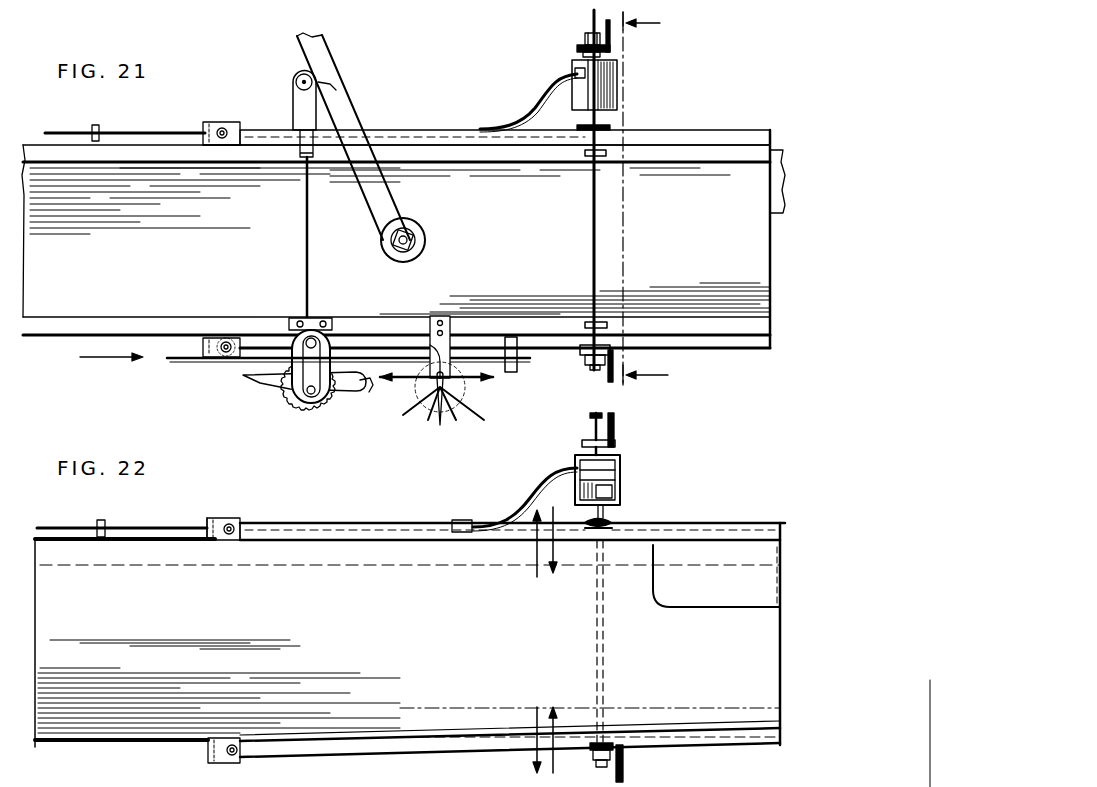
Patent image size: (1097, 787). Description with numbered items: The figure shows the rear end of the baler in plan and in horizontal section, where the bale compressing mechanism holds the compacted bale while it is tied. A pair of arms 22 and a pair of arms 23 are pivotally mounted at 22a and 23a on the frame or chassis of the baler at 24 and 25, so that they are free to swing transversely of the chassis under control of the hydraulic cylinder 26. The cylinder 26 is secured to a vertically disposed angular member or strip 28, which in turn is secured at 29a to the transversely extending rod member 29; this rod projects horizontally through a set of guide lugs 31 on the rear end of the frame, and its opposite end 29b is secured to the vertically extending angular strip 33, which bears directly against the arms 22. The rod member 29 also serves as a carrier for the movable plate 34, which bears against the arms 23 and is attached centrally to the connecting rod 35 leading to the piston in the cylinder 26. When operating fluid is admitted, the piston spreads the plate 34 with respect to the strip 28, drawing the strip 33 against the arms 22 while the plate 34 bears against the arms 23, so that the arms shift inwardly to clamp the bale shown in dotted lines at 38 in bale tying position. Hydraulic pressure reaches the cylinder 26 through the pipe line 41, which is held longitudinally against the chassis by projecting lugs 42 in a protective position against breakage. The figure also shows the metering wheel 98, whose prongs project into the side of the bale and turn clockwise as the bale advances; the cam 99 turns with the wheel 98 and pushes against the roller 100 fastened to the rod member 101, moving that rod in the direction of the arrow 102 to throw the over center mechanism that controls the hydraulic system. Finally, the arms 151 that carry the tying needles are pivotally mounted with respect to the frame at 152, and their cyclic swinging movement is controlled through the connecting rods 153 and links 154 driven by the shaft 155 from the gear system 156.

In FIG. 21, the arm 22 is at (730, 346).
In FIG. 22, the arm 22 is at (740, 748).
In FIG. 21, the pivot mounting of arm 22a is at (226, 354).
In FIG. 22, the pivot mounting of arm 22a is at (240, 748).
In FIG. 21, the arm 23 is at (680, 132).
In FIG. 22, the arm 23 is at (735, 532).
In FIG. 21, the pivot mounting of arm 23a is at (230, 121).
In FIG. 22, the pivot mounting of arm 23a is at (238, 518).
In FIG. 21, the frame mounting point 24 is at (202, 146).
In FIG. 22, the frame mounting point 24 is at (205, 527).
In FIG. 21, the frame mounting point 25 is at (198, 347).
In FIG. 22, the frame mounting point 25 is at (205, 752).
In FIG. 21, the hydraulic cylinder 26 is at (607, 90).
In FIG. 22, the hydraulic cylinder 26 is at (623, 478).
In FIG. 21, the vertically disposed angular member or strip 28 is at (612, 47).
In FIG. 21, the transversely extending rod member 29 is at (600, 262).
In FIG. 21, the rod end securing point 29a is at (582, 44).
In FIG. 22, the rod end securing point 29a is at (592, 760).
In FIG. 21, the rod end 29b is at (587, 363).
In FIG. 22, the rod end 29b is at (16, 768).
In FIG. 21, the guide lugs 31 is at (586, 158).
In FIG. 22, the guide lugs 31 is at (20, 772).
In FIG. 21, the vertically extending angular strip 33 is at (615, 357).
In FIG. 22, the vertically extending angular strip 33 is at (625, 767).
In FIG. 21, the movable plate 34 is at (612, 126).
In FIG. 22, the movable plate 34 is at (613, 531).
In FIG. 22, the connecting rod 35 is at (613, 522).
In FIG. 22, the bale 38 is at (617, 432).
In FIG. 21, the pipe line 41 is at (158, 130).
In FIG. 22, the pipe line 41 is at (150, 522).
In FIG. 21, the projecting lugs 42 is at (103, 121).
In FIG. 22, the projecting lugs 42 is at (92, 514).
In FIG. 21, the metering wheel 98 is at (412, 418).
In FIG. 21, the cam 99 is at (425, 332).
In FIG. 21, the roller 100 is at (463, 365).
In FIG. 21, the rod member 101 is at (177, 363).
In FIG. 21, the arrow 102 is at (118, 362).
In FIG. 21, the arms 151 is at (345, 110).
In FIG. 21, the pivotal mounting of arms 152 is at (417, 233).
In FIG. 21, the connecting rods 153 is at (312, 256).
In FIG. 21, the links 154 is at (306, 372).
In FIG. 21, the shaft 155 is at (311, 395).
In FIG. 21, the gear system 156 is at (337, 398).